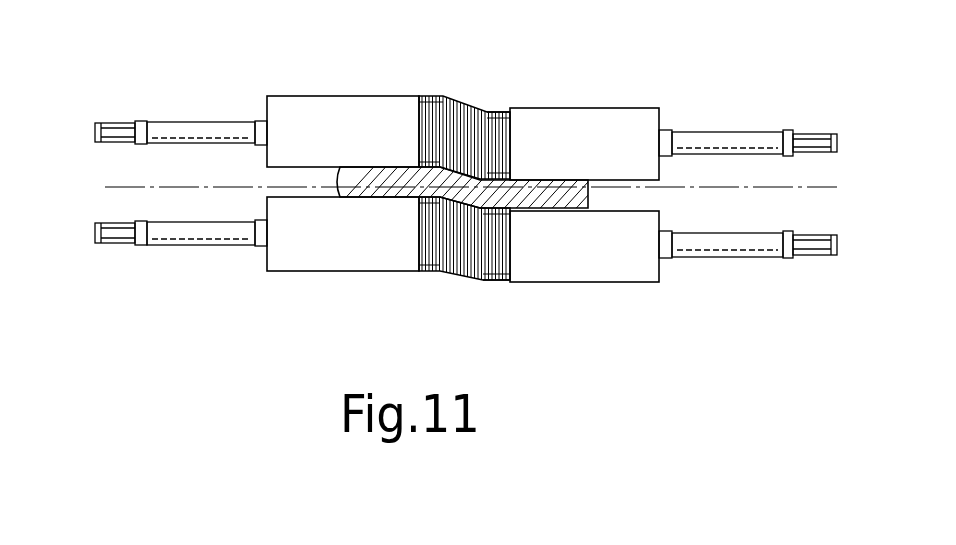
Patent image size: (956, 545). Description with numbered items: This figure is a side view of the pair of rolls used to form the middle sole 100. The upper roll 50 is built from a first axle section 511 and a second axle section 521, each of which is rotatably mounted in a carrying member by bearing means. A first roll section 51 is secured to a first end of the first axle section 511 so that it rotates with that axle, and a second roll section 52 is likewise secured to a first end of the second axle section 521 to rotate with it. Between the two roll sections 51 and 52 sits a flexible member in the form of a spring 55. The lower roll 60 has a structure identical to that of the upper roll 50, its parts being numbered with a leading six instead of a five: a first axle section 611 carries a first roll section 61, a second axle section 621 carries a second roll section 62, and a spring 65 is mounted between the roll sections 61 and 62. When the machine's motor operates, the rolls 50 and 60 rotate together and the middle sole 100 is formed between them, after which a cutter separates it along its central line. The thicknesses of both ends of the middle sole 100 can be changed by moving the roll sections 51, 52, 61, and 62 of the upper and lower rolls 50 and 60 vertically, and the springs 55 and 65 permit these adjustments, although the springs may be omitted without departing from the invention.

The upper roll 50 is at (477, 97).
The first roll section 51 is at (340, 112).
The first axle section 511 is at (200, 124).
The second roll section 52 is at (604, 120).
The second axle section 521 is at (730, 137).
The spring 55 is at (493, 108).
The lower roll 60 is at (467, 283).
The first roll section 61 is at (382, 256).
The first axle section 611 is at (200, 232).
The second roll section 62 is at (605, 262).
The second axle section 621 is at (740, 242).
The spring 65 is at (503, 281).
The middle sole 100 is at (343, 185).